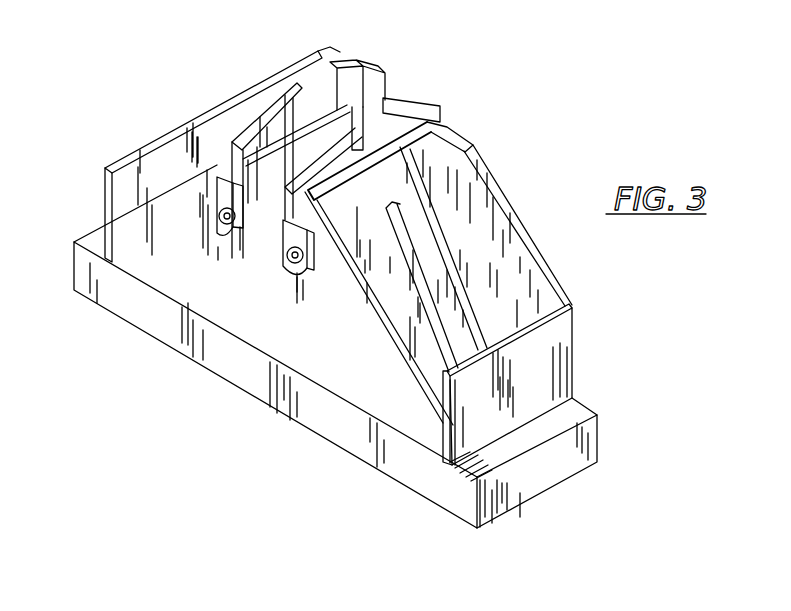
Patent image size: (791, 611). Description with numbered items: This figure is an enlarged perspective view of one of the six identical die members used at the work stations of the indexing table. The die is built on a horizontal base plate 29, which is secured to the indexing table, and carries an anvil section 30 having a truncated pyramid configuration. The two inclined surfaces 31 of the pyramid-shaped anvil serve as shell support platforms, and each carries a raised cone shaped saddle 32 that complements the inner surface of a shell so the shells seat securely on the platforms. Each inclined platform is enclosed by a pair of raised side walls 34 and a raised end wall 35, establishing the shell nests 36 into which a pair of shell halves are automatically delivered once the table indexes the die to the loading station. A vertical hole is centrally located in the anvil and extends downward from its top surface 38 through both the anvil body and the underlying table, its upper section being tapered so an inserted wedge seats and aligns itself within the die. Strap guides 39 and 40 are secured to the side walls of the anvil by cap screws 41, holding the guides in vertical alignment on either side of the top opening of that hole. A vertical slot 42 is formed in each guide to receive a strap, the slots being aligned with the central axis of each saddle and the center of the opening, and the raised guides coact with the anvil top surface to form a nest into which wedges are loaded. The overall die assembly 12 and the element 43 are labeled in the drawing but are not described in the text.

The assembly 12 is at (474, 131).
The horizontal base plate 29 is at (594, 442).
The anvil section 30 is at (267, 343).
The inclined surfaces 31 is at (460, 242).
The cone shaped saddle 32 is at (463, 313).
The raised side walls 34 is at (163, 153).
The raised end wall 35 is at (107, 207).
The shell nests 36 is at (368, 186).
The top surface 38 is at (400, 100).
The strap guide 39 is at (348, 84).
The strap guide 40 is at (445, 120).
The cap screws 41 is at (293, 262).
The vertical slot 42 is at (312, 75).
The top plank 43 is at (265, 93).